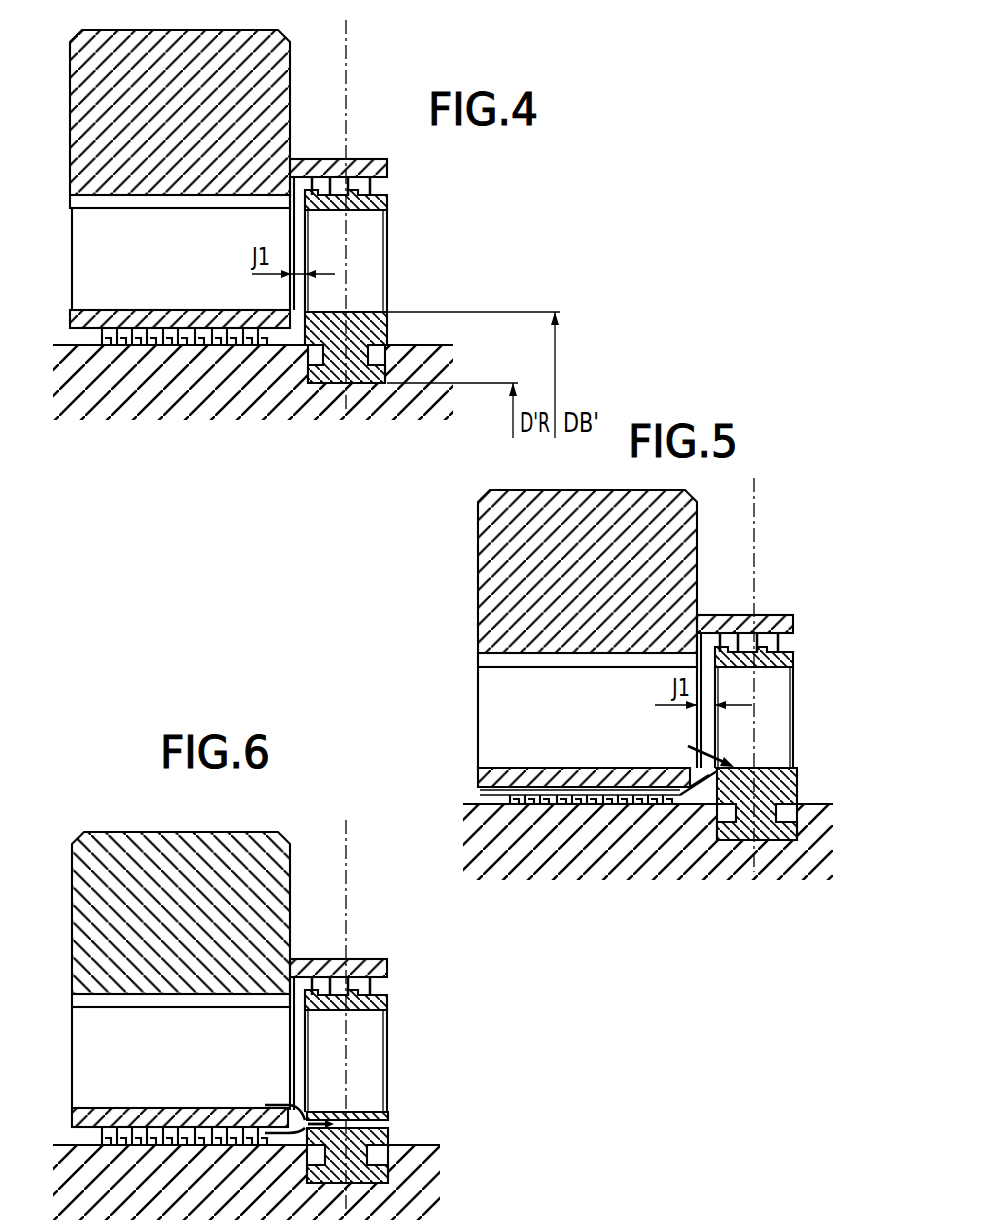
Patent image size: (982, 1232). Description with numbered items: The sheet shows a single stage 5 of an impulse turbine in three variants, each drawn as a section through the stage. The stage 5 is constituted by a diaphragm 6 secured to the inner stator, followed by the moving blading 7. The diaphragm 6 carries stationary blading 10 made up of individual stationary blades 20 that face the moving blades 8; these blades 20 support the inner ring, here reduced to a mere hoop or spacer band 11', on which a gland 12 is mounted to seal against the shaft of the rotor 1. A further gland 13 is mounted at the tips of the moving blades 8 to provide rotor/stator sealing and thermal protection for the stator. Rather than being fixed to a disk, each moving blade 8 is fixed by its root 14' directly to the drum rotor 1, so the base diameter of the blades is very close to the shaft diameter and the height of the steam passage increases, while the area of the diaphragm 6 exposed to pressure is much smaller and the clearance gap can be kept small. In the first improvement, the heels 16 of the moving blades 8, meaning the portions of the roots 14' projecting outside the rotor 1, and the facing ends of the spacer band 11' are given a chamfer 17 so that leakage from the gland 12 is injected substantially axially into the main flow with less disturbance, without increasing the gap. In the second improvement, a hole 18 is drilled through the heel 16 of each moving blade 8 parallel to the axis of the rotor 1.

In FIG. 4, the rotor 1 is at (92, 365).
In FIG. 5, the rotor 1 is at (488, 835).
In FIG. 6, the rotor 1 is at (246, 1160).
In FIG. 4, the stage 5 is at (394, 221).
In FIG. 4, the diaphragm 6 is at (262, 98).
In FIG. 5, the diaphragm 6 is at (485, 563).
In FIG. 6, the diaphragm 6 is at (200, 913).
In FIG. 4, the moving blading 7 is at (390, 296).
In FIG. 5, the moving blading 7 is at (797, 720).
In FIG. 6, the moving blading 7 is at (368, 1061).
In FIG. 4, the moving blades 8 is at (378, 258).
In FIG. 5, the moving blades 8 is at (782, 694).
In FIG. 6, the moving blades 8 is at (369, 1054).
In FIG. 4, the stationary blading 10 is at (68, 293).
In FIG. 5, the stationary blading 10 is at (476, 718).
In FIG. 6, the stationary blading 10 is at (170, 1043).
In FIG. 4, the inner hoop or spacer band 11' is at (180, 294).
In FIG. 5, the inner hoop or spacer band 11' is at (584, 756).
In FIG. 6, the inner hoop or spacer band 11' is at (180, 1096).
In FIG. 4, the gland 12 is at (200, 335).
In FIG. 5, the gland 12 is at (500, 796).
In FIG. 6, the gland 12 is at (184, 1105).
In FIG. 4, the gland 13 is at (378, 186).
In FIG. 5, the gland 13 is at (778, 643).
In FIG. 6, the gland 13 is at (359, 984).
In FIG. 4, the roots 14' is at (377, 347).
In FIG. 5, the roots 14' is at (765, 844).
In FIG. 6, the roots 14' is at (391, 1154).
In FIG. 5, the heels 16 is at (795, 766).
In FIG. 6, the heels 16 is at (349, 1103).
In FIG. 5, the chamfer 17 is at (695, 749).
In FIG. 6, the hole 18 is at (370, 1122).
In FIG. 4, the stationary blades 20 is at (93, 252).